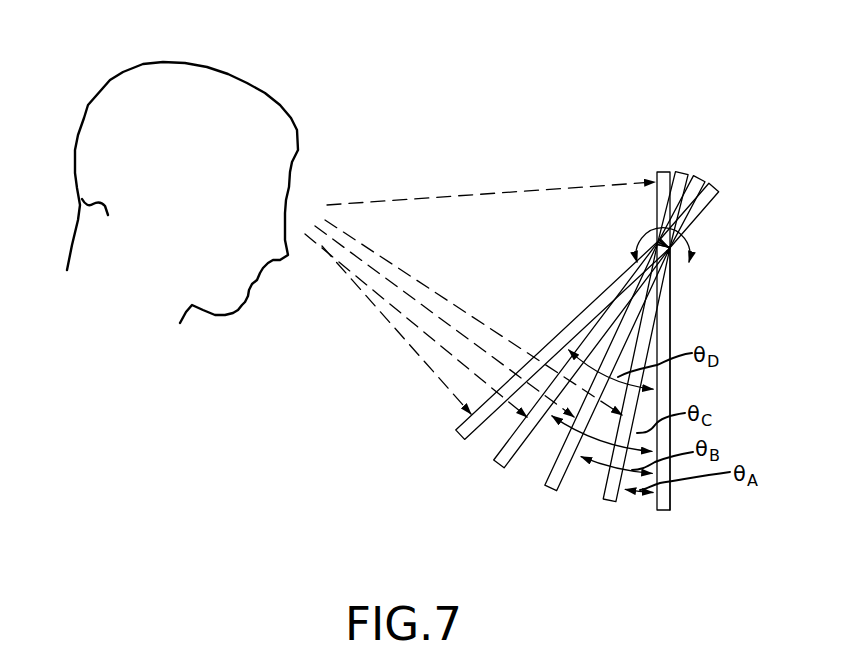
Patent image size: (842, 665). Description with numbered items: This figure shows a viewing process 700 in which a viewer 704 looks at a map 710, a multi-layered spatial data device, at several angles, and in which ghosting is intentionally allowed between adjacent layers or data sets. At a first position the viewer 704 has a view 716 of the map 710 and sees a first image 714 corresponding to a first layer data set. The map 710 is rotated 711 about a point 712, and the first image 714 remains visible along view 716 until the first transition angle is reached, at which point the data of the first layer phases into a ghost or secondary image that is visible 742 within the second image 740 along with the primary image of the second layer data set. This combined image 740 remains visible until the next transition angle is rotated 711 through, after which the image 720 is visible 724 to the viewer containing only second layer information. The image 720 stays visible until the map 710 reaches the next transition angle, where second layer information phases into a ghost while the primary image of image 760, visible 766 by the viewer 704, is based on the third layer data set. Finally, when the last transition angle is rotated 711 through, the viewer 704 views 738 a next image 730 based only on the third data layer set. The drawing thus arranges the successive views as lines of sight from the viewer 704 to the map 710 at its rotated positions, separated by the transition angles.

The viewing process 700 is at (614, 105).
The viewer 704 is at (86, 205).
The map 710 is at (715, 178).
The rotation 711 is at (684, 236).
The point 712 is at (668, 253).
The first image 714 is at (672, 495).
The view 716 is at (452, 195).
The image 720 is at (551, 490).
The view 724 is at (428, 368).
The next image or view 730 is at (461, 437).
The view 738 is at (395, 305).
The second image 740 is at (612, 505).
The view 742 is at (390, 265).
The image or view 760 is at (503, 462).
The view 766 is at (412, 298).